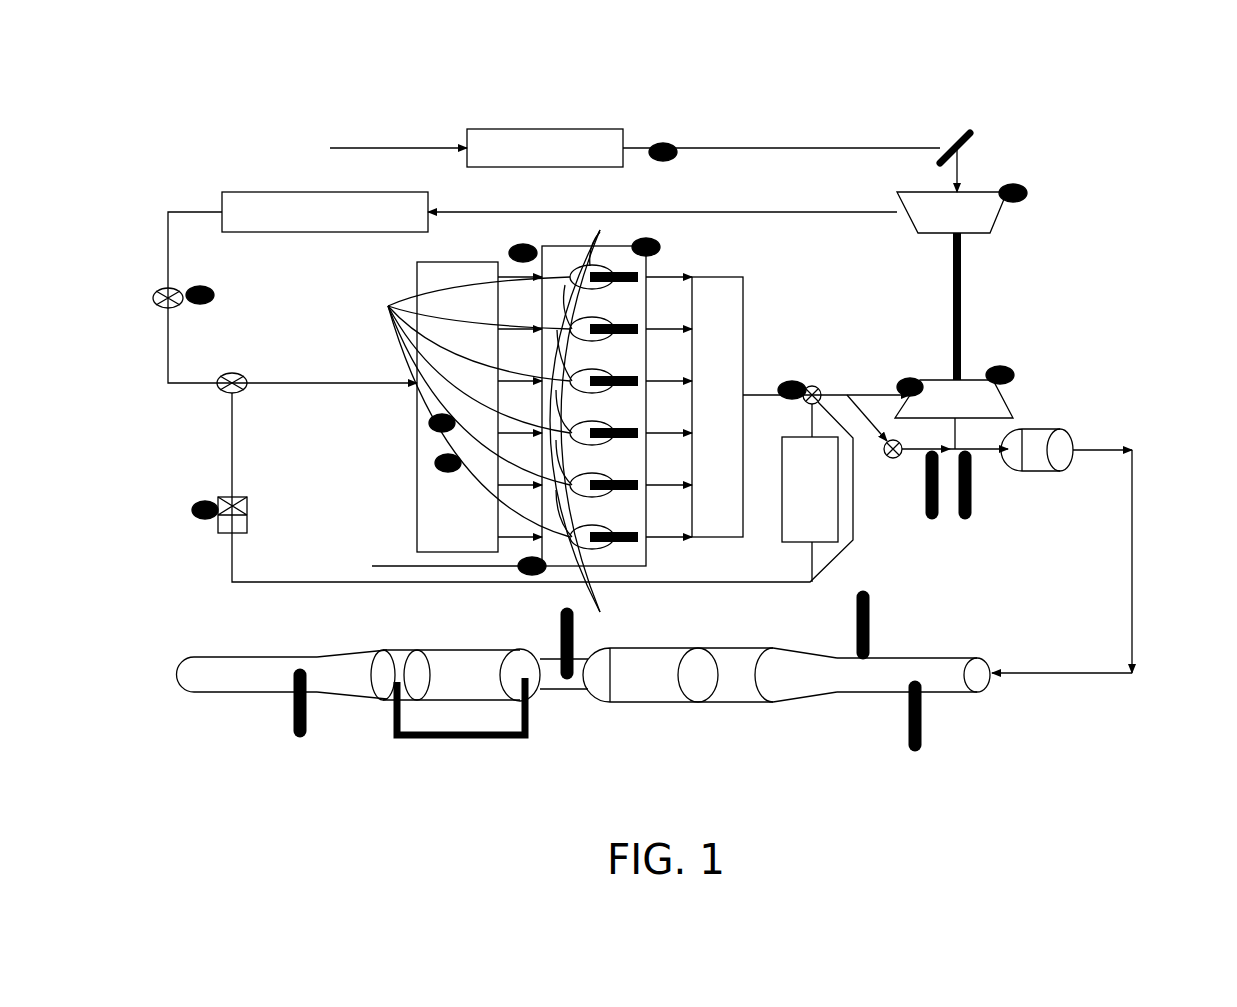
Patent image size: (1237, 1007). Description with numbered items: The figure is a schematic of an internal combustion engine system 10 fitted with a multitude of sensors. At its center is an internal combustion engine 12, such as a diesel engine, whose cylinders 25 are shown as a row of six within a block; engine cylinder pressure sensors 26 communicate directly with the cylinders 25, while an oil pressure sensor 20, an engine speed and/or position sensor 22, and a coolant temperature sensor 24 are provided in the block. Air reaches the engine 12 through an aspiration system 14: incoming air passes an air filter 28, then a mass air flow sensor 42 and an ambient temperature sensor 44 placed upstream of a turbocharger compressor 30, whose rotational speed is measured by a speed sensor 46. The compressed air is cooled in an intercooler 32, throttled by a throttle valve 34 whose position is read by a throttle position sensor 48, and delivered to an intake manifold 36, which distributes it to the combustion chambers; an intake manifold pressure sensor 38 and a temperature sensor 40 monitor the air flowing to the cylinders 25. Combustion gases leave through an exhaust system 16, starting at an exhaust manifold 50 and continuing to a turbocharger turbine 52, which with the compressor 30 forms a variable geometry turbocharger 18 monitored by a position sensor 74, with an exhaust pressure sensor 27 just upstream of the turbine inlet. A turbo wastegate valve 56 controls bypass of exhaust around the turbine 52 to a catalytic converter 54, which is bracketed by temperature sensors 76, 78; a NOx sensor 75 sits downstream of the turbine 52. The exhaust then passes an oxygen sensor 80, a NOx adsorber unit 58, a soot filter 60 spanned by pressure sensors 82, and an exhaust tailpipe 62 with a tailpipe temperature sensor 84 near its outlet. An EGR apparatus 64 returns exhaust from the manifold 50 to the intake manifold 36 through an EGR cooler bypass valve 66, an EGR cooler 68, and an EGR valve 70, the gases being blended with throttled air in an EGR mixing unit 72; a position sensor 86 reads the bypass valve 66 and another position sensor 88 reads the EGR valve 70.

The internal combustion engine system 10 is at (198, 90).
The internal combustion engine 12 is at (772, 276).
The intake or aspiration system 14 is at (215, 176).
The exhaust system 16 is at (1160, 628).
The turbocharger 18 is at (970, 375).
The oil pressure sensor 20 is at (372, 566).
The engine speed and/or position sensor 22 is at (510, 250).
The coolant temperature sensor 24 is at (657, 247).
The cylinders 25 is at (602, 230).
The engine cylinder pressure sensors 26 is at (388, 306).
The exhaust pressure sensor 27 is at (909, 378).
The air filter 28 is at (540, 130).
The turbocharger compressor 30 is at (1010, 214).
The intercooler 32 is at (340, 192).
The throttle valve 34 is at (167, 287).
The intake manifold 36 is at (415, 515).
The intake manifold pressure sensor 38 is at (437, 420).
The temperature sensor 40 is at (443, 460).
The mass air flow sensor 42 is at (667, 143).
The ambient temperature sensor 44 is at (972, 142).
The speed sensor 46 is at (1016, 186).
The throttle position sensor 48 is at (198, 306).
The exhaust manifold 50 is at (744, 333).
The turbocharger turbine 52 is at (1005, 410).
The catalytic converter 54 is at (1061, 460).
The turbo wastegate valve 56 is at (893, 439).
The nitrogen oxide (NOx) adsorber unit 58 is at (630, 690).
The soot filter 60 is at (458, 660).
The exhaust tailpipe 62 is at (237, 660).
The exhaust gas recirculation (EGR) apparatus 64 is at (824, 373).
The EGR cooler bypass valve 66 is at (811, 385).
The EGR cooler 68 is at (826, 458).
The EGR valve 70 is at (217, 530).
The EGR mixing unit 72 is at (226, 390).
The position sensor 74 is at (1005, 372).
The NOx sensor 75 is at (936, 522).
The temperature sensor 76 is at (968, 486).
The temperature sensor 78 is at (922, 722).
The oxygen (O2) sensor 80 is at (870, 608).
The pressure sensors 82 is at (529, 738).
The tailpipe temperature sensor 84 is at (297, 735).
The position sensor 86 is at (743, 395).
The position sensor 88 is at (205, 500).